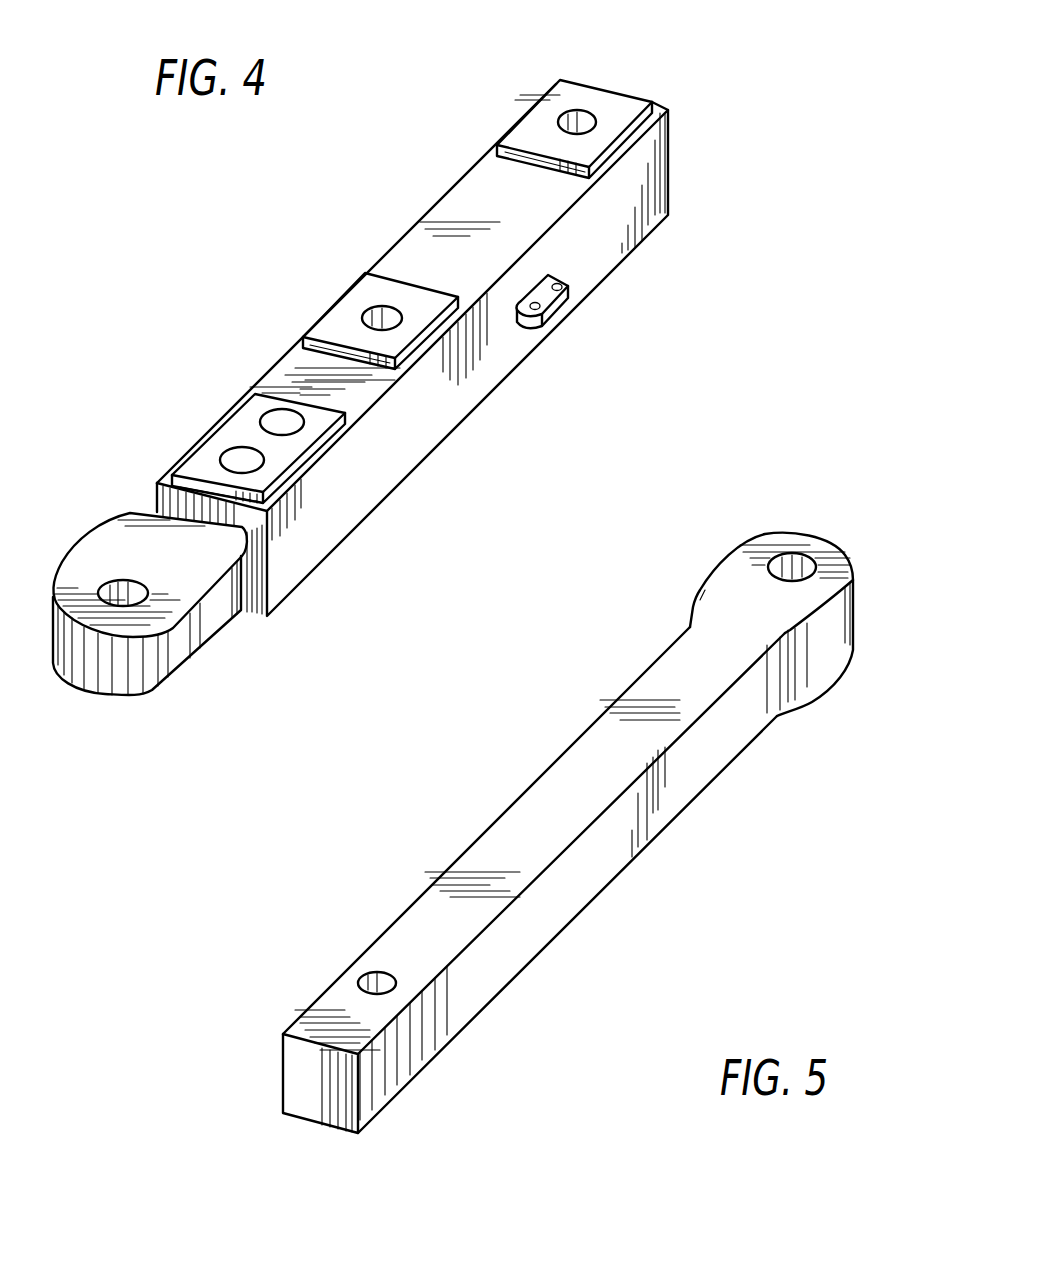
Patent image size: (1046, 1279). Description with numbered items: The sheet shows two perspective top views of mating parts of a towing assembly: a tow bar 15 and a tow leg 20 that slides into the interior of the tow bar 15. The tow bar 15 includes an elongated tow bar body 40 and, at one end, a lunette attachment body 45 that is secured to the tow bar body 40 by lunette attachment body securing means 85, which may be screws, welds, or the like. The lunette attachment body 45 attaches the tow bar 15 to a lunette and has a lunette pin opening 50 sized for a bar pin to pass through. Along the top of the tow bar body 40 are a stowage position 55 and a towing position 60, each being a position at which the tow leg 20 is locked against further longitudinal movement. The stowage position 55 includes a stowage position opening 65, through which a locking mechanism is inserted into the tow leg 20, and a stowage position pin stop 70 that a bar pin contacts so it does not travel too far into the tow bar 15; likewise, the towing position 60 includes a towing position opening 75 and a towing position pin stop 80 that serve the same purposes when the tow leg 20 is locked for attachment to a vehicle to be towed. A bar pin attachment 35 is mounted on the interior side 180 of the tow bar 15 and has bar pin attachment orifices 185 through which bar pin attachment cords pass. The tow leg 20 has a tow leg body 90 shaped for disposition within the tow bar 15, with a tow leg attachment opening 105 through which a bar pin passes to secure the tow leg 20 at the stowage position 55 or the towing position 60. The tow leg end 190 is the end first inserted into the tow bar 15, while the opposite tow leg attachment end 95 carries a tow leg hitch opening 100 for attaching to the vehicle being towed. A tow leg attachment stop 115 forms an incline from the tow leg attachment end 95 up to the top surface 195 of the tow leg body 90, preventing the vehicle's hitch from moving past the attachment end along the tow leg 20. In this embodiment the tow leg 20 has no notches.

In FIG. 4, the tow bar 15 is at (172, 278).
In FIG. 5, the tow leg 20 is at (735, 822).
In FIG. 4, the bar pin attachment 35 is at (550, 325).
In FIG. 4, the tow bar body 40 is at (380, 505).
In FIG. 4, the lunette attachment body 45 is at (120, 702).
In FIG. 4, the lunette pin opening 50 is at (110, 580).
In FIG. 4, the stowage position 55 is at (342, 288).
In FIG. 4, the towing position 60 is at (537, 98).
In FIG. 4, the stowage position opening 65 is at (388, 318).
In FIG. 4, the stowage position pin stop 70 is at (328, 330).
In FIG. 4, the towing position opening 75 is at (580, 120).
In FIG. 4, the towing position pin stop 80 is at (522, 147).
In FIG. 4, the lunette attachment body securing means 85 is at (225, 438).
In FIG. 5, the tow leg body 90 is at (560, 908).
In FIG. 5, the tow leg attachment end 95 is at (858, 612).
In FIG. 5, the tow leg hitch opening 100 is at (790, 567).
In FIG. 5, the tow leg attachment opening 105 is at (375, 983).
In FIG. 5, the tow leg attachment stop 115 is at (718, 605).
In FIG. 4, the interior side 180 is at (627, 215).
In FIG. 4, the bar pin attachment orifices 185 is at (556, 285).
In FIG. 5, the tow leg end 190 is at (305, 1090).
In FIG. 5, the top surface 195 is at (475, 865).